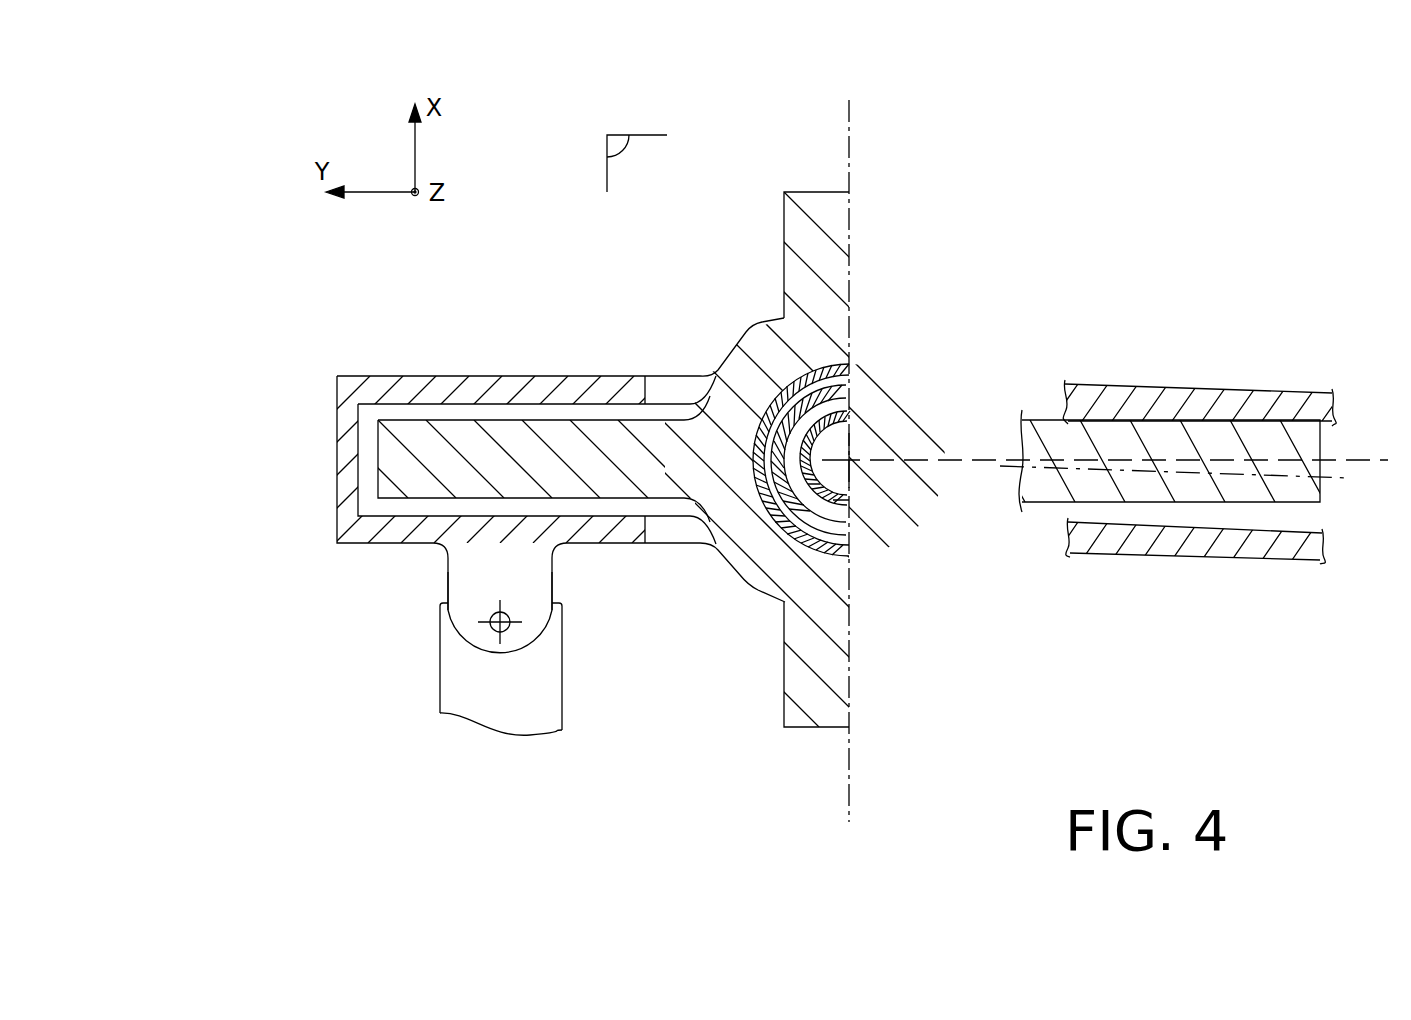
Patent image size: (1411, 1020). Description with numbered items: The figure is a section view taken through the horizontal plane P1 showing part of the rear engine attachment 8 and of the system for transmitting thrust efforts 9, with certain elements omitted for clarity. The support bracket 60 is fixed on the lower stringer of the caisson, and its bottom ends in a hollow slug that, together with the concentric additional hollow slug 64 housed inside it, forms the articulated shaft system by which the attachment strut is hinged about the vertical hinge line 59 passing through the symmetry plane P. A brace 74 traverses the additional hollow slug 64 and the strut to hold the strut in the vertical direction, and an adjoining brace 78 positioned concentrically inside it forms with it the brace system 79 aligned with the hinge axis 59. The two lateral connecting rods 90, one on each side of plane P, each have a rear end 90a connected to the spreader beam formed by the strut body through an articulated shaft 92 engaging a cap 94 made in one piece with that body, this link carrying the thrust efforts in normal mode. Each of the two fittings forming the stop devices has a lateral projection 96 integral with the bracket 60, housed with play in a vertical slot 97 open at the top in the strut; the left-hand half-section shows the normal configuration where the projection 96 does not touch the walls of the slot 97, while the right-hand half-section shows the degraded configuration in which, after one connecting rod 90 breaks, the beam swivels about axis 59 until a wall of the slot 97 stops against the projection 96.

The rear engine attachment 8 is at (603, 322).
The system for transmitting thrust efforts 9 is at (445, 679).
The hinge line 59 is at (849, 460).
The support bracket 60 is at (776, 459).
The additional hollow slug 64 is at (787, 380).
The brace 74 is at (848, 530).
The adjoining brace 78 is at (848, 502).
The brace system 79 is at (870, 481).
The lateral connecting rod 90 is at (445, 654).
The rear end 90a is at (460, 652).
The articulated shaft 92 is at (505, 625).
The cap 94 is at (538, 572).
The lateral projection 96 is at (462, 440).
The vertical slot 97 is at (428, 404).
The symmetry plane P is at (855, 133).
The horizontal plane P1 is at (622, 146).
The axis A is at (1260, 474).